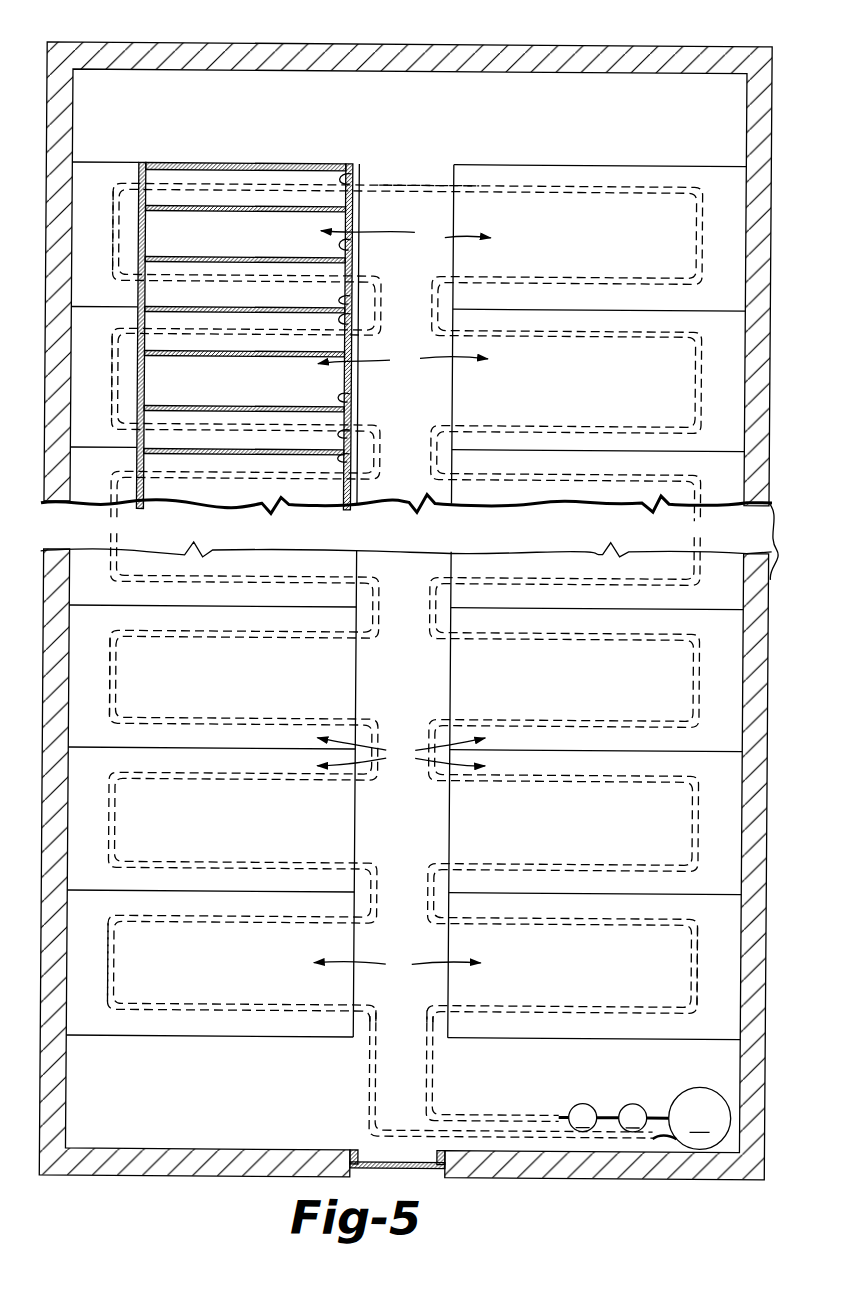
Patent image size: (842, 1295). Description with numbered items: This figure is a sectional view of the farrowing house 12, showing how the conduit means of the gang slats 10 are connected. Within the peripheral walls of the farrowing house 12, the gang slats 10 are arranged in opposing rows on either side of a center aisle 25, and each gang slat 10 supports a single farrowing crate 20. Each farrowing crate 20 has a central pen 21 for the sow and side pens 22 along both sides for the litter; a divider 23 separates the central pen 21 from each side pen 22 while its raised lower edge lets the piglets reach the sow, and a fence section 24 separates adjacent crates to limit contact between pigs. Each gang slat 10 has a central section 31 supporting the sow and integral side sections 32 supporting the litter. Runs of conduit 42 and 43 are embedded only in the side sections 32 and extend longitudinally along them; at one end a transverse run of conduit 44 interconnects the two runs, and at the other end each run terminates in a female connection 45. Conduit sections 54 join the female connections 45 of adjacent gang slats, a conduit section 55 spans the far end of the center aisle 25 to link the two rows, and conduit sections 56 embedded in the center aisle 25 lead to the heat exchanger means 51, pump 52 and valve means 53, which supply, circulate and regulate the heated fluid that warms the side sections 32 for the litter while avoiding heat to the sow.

The gang slat 10 is at (402, 603).
The farrowing house 12 is at (636, 36).
The farrowing crate 20 is at (356, 216).
The central pen 21 is at (348, 243).
The side pen 22 is at (350, 176).
The divider 23 is at (262, 210).
The fence section 24 is at (208, 160).
The center aisle 25 is at (423, 497).
The central section 31 is at (309, 250).
The side section 32 is at (284, 164).
The run of conduit 42 is at (257, 278).
The run of conduit 43 is at (228, 187).
The transverse run of conduit 44 is at (114, 261).
The female connection 45 is at (372, 925).
The heat exchanger means 51 is at (716, 1056).
The pump 52 is at (652, 1072).
The valve means 53 is at (590, 1100).
The conduit section 54 is at (424, 295).
The conduit section 55 is at (440, 183).
The conduit section 56 is at (420, 1096).